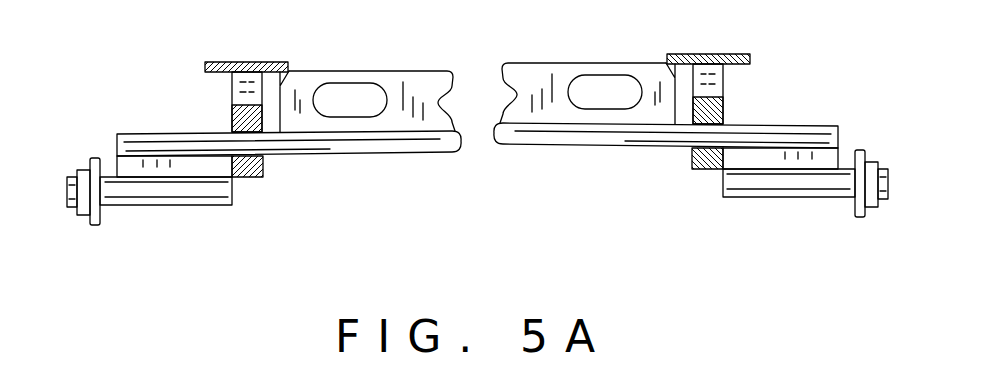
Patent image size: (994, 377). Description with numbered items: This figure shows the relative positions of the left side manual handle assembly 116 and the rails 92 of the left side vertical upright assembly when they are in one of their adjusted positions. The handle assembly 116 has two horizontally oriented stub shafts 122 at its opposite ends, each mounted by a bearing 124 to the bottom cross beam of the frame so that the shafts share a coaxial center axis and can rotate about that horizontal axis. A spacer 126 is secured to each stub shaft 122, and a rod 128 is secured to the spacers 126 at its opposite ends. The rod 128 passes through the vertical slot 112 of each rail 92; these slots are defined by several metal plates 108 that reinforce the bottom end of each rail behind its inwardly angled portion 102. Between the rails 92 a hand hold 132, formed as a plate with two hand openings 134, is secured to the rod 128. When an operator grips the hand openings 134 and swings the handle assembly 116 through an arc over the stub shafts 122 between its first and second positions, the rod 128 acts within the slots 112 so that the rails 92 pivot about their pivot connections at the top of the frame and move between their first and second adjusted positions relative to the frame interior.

The rails 92 is at (244, 62).
The inwardly angled portion 102 is at (261, 62).
The metal plates 108 is at (231, 128).
The vertical slot 112 is at (221, 121).
The left side manual handle assembly 116 is at (645, 238).
The stub shafts 122 is at (135, 197).
The bearings 124 is at (83, 203).
The spacers 126 is at (133, 163).
The rod 128 is at (383, 143).
The hand hold 132 is at (399, 70).
The hand openings 134 is at (344, 98).